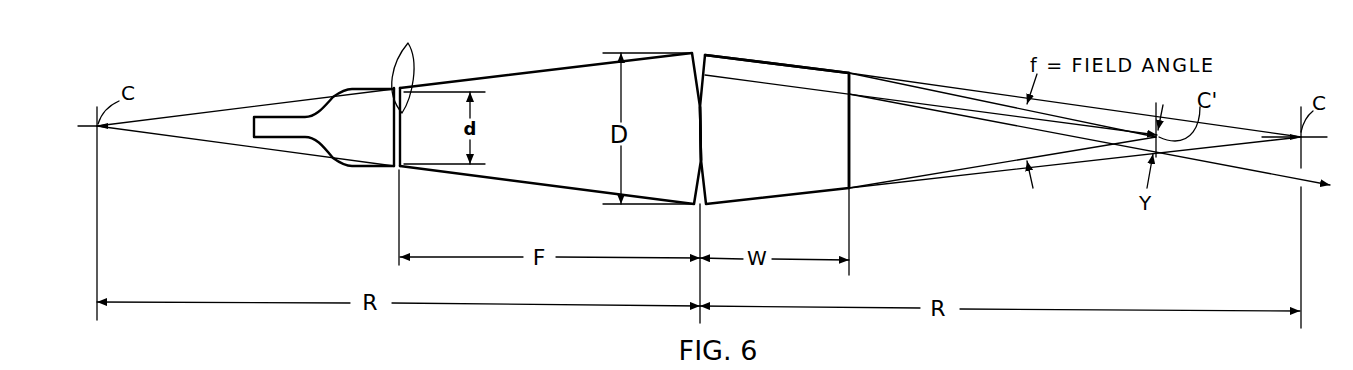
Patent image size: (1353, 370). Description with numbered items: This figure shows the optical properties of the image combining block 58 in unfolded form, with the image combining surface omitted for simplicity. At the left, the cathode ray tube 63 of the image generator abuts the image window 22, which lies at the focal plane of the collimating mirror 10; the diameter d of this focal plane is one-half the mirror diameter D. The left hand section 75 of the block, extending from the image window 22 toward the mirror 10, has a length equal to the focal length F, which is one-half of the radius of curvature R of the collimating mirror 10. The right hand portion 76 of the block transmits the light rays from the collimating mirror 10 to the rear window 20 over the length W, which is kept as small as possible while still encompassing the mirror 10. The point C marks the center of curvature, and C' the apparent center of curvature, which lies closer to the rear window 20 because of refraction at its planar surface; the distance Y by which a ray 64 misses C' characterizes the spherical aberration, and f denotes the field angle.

The collimating mirror 10 is at (702, 106).
The rear window 20 is at (852, 118).
The image window 22 is at (409, 93).
The image combining block 58 is at (763, 47).
The cathode ray tube 63 is at (350, 166).
The ray 64 is at (1233, 171).
The first tapered fiber optic section 75 is at (543, 138).
The right hand portion of the combining block 76 is at (737, 138).